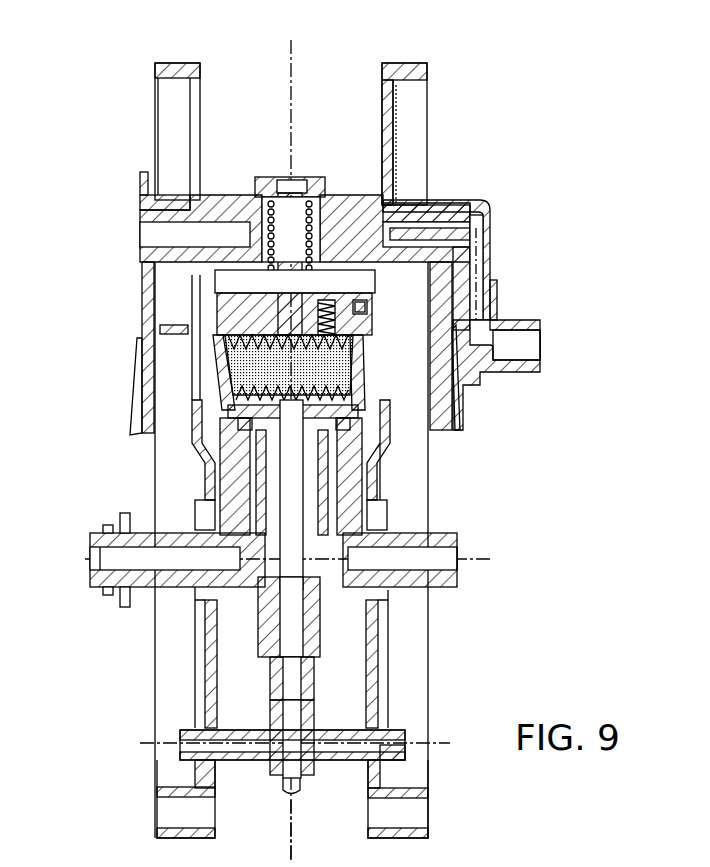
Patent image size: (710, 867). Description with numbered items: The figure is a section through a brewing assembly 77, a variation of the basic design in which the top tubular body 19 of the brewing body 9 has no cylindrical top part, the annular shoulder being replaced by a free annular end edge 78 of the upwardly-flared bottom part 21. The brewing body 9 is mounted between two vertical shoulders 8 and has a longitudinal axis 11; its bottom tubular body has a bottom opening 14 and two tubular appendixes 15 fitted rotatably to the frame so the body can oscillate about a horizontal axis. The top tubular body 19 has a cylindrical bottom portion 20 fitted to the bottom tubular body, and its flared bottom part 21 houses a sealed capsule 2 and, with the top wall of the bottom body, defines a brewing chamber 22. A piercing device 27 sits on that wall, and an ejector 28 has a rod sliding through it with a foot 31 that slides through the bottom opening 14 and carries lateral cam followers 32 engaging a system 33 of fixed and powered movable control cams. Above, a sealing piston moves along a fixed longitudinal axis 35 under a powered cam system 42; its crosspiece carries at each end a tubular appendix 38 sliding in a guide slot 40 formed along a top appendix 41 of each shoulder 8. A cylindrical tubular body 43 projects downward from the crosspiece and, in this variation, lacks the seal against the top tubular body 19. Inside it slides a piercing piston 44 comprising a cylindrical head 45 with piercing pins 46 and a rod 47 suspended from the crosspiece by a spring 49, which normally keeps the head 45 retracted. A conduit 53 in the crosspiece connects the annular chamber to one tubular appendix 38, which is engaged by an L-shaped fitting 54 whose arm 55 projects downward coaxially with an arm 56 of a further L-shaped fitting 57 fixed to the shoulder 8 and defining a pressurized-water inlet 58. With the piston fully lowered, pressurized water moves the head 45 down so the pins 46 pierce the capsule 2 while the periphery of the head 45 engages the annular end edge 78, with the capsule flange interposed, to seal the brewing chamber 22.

The sealed capsule 2 is at (365, 373).
The vertical shoulder 8 is at (378, 470).
The brewing body 9 is at (366, 432).
The longitudinal axis 11 is at (297, 823).
The bottom opening 14 is at (318, 580).
The tubular appendix 15 is at (425, 533).
The top tubular body 19 is at (216, 396).
The cylindrical bottom portion 20 is at (362, 500).
The upwardly-flared bottom part 21 is at (235, 381).
The brewing chamber 22 is at (235, 365).
The piercing device 27 is at (360, 410).
The ejector 28 is at (326, 642).
The foot 31 is at (312, 698).
The lateral cam follower 32 is at (250, 760).
The system of control cams 33 is at (383, 755).
The longitudinal axis of piston 35 is at (296, 78).
The tubular appendix 38 is at (150, 215).
The guide slot 40 is at (389, 95).
The top appendix 41 is at (390, 70).
The powered cam system 42 is at (397, 815).
The cylindrical tubular body 43 is at (370, 307).
The piercing piston 44 is at (265, 290).
The cylindrical head 45 is at (148, 286).
The piercing pins 46 is at (238, 365).
The rod 47 is at (340, 222).
The spring 49 is at (282, 193).
The conduit 53 is at (385, 243).
The L-shaped fitting 54 is at (479, 218).
The arm 55 is at (489, 240).
The arm 56 is at (497, 287).
The further L-shaped fitting 57 is at (507, 313).
The pressurized-water inlet 58 is at (515, 349).
The brewing assembly 77 is at (586, 186).
The free annular end edge 78 is at (208, 335).